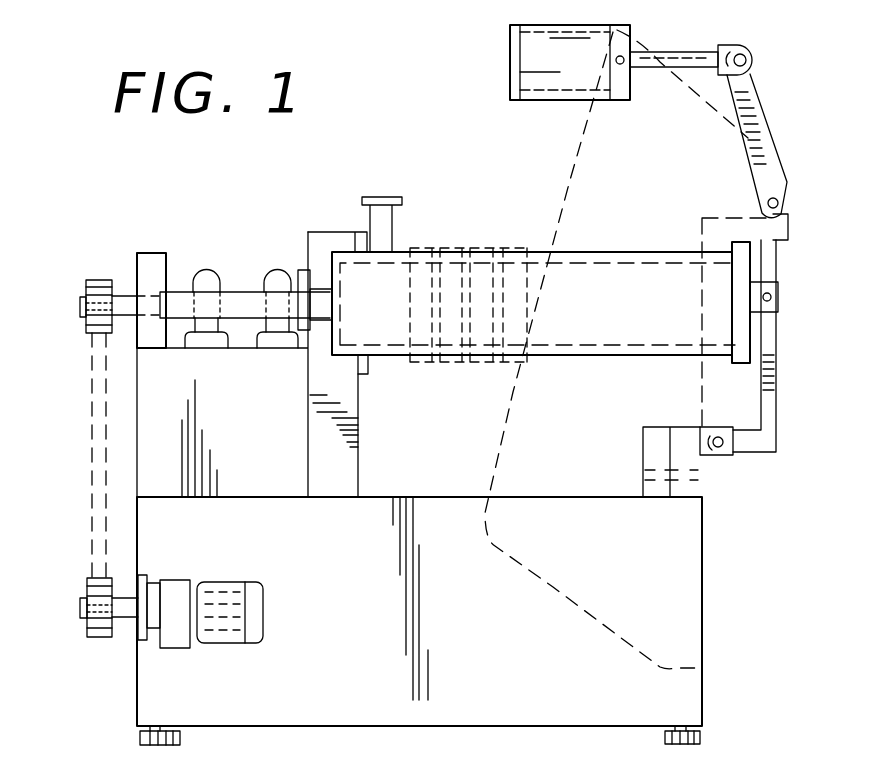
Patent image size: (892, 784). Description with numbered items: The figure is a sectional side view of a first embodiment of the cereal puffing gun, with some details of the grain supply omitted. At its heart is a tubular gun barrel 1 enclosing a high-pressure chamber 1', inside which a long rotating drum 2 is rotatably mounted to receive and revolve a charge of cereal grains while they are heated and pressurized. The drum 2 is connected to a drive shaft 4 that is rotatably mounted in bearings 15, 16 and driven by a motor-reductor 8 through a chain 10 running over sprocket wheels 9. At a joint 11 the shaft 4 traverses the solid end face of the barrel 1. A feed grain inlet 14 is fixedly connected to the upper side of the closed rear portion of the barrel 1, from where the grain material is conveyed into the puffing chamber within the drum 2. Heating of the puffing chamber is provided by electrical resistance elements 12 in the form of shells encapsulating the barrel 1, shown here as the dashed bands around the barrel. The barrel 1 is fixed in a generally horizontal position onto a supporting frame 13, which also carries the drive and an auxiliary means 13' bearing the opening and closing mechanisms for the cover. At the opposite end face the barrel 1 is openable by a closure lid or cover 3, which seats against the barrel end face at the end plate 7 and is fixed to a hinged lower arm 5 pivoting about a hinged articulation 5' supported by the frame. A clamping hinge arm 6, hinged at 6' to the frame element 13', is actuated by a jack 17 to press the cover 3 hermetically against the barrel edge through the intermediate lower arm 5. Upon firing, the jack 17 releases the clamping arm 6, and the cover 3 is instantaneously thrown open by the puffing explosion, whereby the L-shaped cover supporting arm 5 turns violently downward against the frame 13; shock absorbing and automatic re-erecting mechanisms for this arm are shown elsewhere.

The tubular gun barrel 1 is at (532, 273).
The high-pressure chamber 1' is at (662, 322).
The rotating drum 2 is at (580, 262).
The closure lid or cover 3 is at (745, 330).
The drive shaft 4 is at (243, 300).
The hinged lower arm 5 is at (789, 288).
The hinged articulation 5' is at (733, 480).
The hinge arm 6 is at (767, 157).
The hinge 6' is at (807, 176).
The end plate 7 is at (728, 354).
The motor-reductor 8 is at (223, 603).
The sprocket wheels 9 is at (84, 580).
The chain 10 is at (98, 406).
The joint 11 is at (320, 287).
The electrical resistance elements 12 is at (480, 248).
The supporting frame 13 is at (462, 488).
The auxiliary means 13' is at (613, 349).
The feed grain inlet 14 is at (368, 215).
The bearings 15 is at (276, 345).
The bearing 16 is at (150, 253).
The jack 17 is at (526, 62).